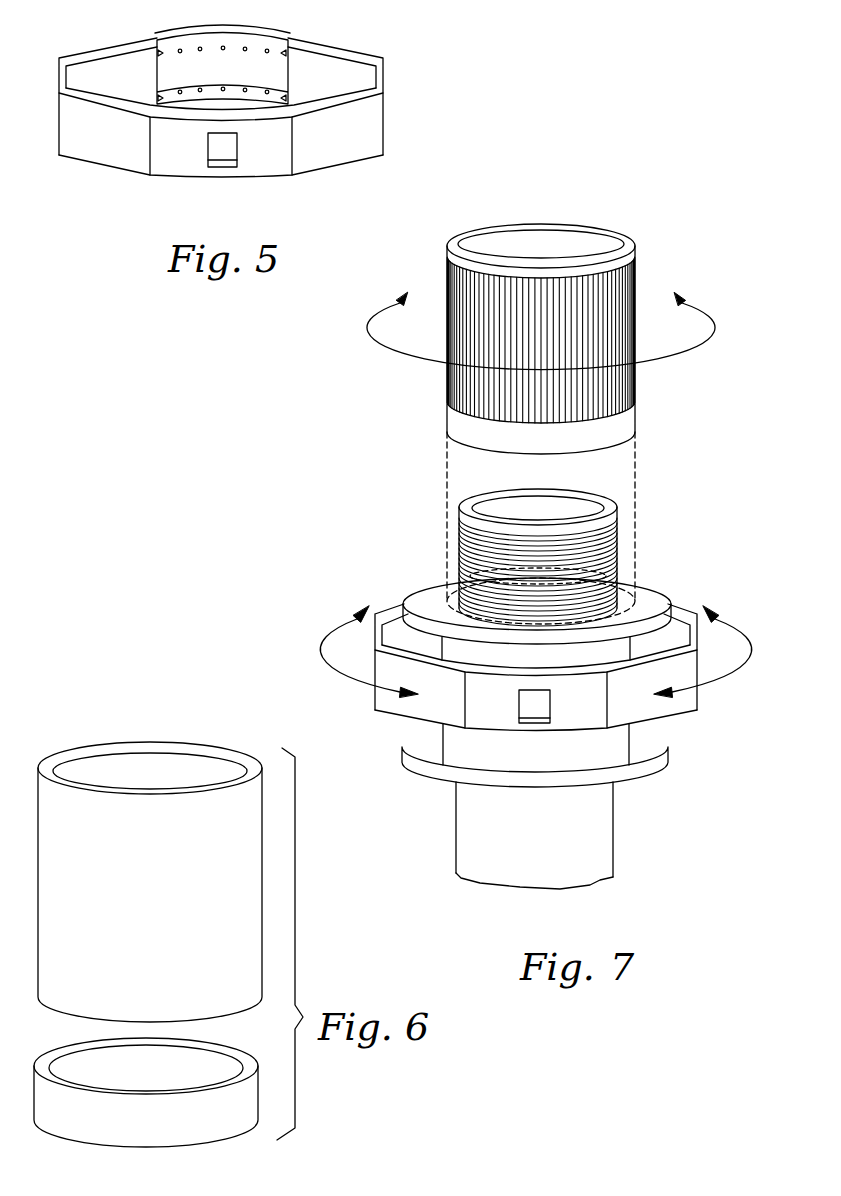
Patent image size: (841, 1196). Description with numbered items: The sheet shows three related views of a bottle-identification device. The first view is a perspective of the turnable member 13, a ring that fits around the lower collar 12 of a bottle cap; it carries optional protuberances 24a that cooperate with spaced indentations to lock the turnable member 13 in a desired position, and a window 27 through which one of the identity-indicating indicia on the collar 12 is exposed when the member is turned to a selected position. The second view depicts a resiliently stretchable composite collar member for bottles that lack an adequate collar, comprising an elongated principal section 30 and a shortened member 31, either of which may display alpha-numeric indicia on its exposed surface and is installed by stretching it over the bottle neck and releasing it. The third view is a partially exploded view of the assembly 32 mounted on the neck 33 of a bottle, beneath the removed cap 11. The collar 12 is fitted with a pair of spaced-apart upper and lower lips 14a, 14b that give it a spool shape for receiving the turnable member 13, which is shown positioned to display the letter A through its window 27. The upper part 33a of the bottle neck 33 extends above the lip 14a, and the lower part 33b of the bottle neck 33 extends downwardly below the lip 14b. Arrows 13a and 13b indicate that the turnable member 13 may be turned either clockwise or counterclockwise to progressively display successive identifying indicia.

In FIG. 7, the cap 11 is at (633, 400).
In FIG. 7, the collar 12 is at (462, 748).
In FIG. 5, the turnable member 13 is at (125, 219).
In FIG. 7, the turnable member 13 is at (649, 714).
In FIG. 7, the arrow 13a is at (312, 650).
In FIG. 7, the arrow 13b is at (722, 688).
In FIG. 7, the lip 14a is at (653, 593).
In FIG. 7, the lip 14b is at (663, 758).
In FIG. 5, the protuberance 24a is at (227, 28).
In FIG. 5, the window 27 is at (225, 157).
In FIG. 7, the window 27 is at (550, 716).
In FIG. 6, the principal section 30 is at (163, 925).
In FIG. 6, the member 31 is at (159, 1131).
In FIG. 7, the assembly 32 is at (539, 706).
In FIG. 7, the bottle neck 33 is at (557, 852).
In FIG. 7, the upper part of the bottle neck 33a is at (460, 548).
In FIG. 7, the lower part of the bottle neck 33b is at (589, 868).